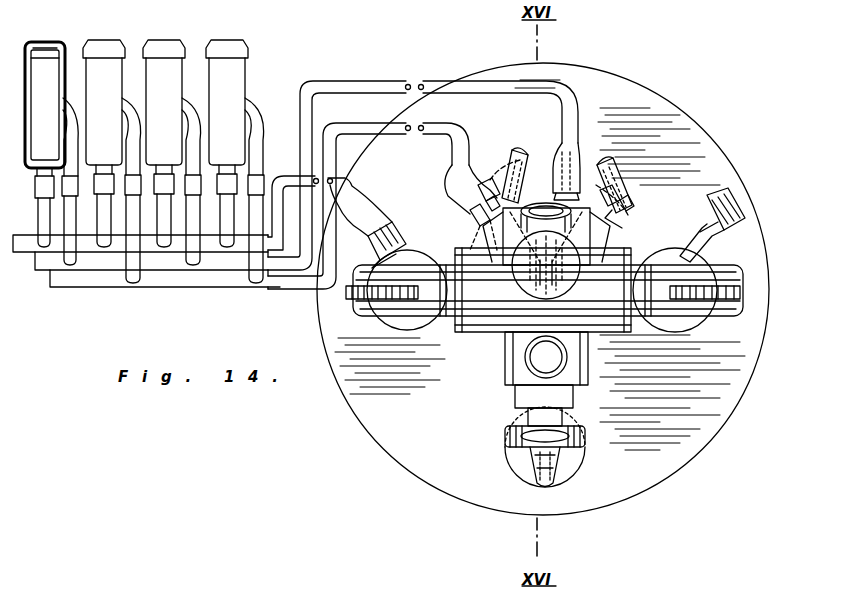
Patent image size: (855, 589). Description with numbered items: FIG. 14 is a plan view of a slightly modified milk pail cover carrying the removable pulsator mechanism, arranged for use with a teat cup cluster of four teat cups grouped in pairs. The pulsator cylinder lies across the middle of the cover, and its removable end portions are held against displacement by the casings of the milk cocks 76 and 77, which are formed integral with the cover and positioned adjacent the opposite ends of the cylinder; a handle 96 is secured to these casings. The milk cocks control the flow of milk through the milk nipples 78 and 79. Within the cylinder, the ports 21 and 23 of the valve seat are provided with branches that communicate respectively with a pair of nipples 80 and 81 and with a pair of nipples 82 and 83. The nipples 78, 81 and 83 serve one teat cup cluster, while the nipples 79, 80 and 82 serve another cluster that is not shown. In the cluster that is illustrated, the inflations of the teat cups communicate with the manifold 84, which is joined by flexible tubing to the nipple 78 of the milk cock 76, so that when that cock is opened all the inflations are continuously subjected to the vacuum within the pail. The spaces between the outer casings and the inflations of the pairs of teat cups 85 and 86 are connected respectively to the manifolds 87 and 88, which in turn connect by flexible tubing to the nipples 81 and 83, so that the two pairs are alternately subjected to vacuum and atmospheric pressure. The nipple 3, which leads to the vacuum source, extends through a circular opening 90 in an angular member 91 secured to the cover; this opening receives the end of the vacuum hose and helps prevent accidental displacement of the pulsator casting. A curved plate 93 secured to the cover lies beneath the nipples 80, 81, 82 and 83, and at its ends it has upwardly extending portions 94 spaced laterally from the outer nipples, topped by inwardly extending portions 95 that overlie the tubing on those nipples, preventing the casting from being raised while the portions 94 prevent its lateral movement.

The pair of teat cups 85 is at (42, 60).
The pair of teat cups 86 is at (102, 60).
The manifold 87 is at (97, 262).
The manifold 88 is at (152, 288).
The manifold 84 is at (243, 250).
The nipple 82 is at (541, 172).
The nipple 83 is at (497, 178).
The nipple 81 is at (568, 203).
The curved plate 93 is at (560, 160).
The upwardly extending portions 94 is at (478, 200).
The inwardly extending portions 95 is at (490, 207).
The nipple 80 is at (618, 207).
The milk nipple 78 is at (395, 224).
The milk nipple 79 is at (712, 232).
The port 21 is at (606, 262).
The port 23 is at (528, 280).
The handle 96 is at (498, 306).
The milk cock 76 is at (412, 322).
The milk cock 77 is at (688, 324).
The circular opening 90 is at (586, 440).
The angular member 91 is at (520, 476).
The nipple 3 is at (562, 468).